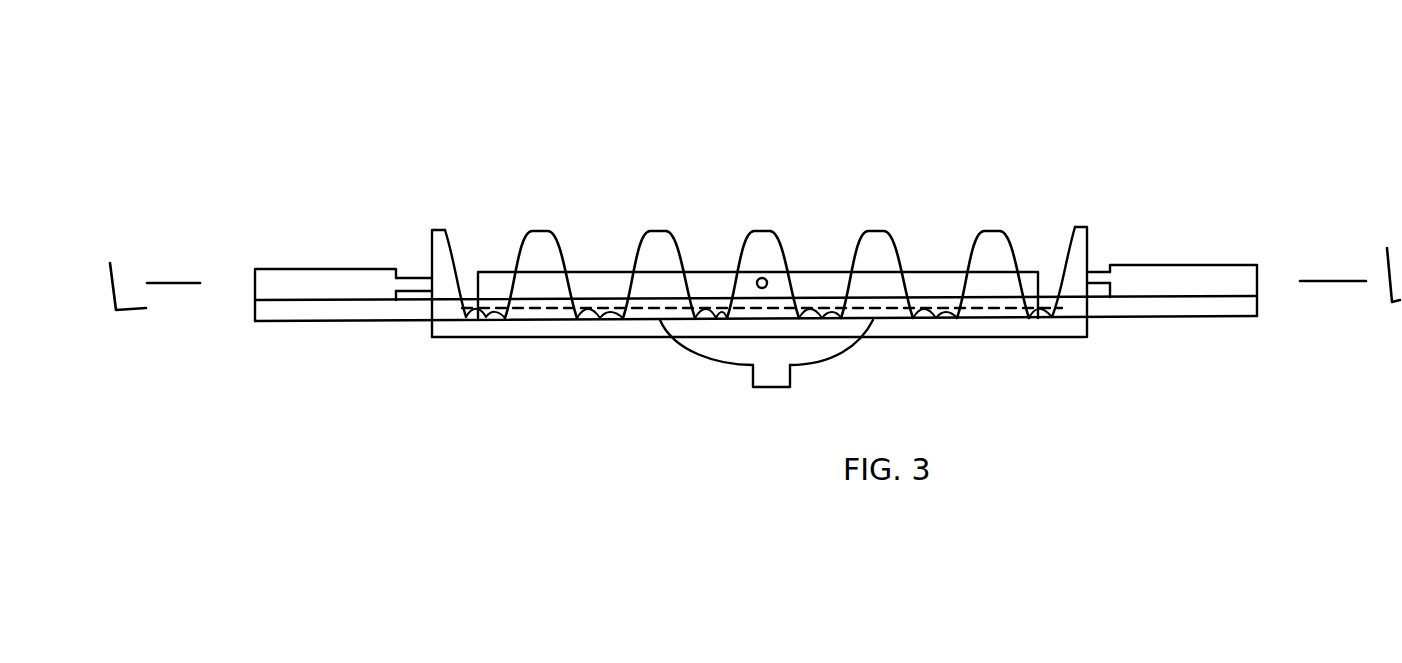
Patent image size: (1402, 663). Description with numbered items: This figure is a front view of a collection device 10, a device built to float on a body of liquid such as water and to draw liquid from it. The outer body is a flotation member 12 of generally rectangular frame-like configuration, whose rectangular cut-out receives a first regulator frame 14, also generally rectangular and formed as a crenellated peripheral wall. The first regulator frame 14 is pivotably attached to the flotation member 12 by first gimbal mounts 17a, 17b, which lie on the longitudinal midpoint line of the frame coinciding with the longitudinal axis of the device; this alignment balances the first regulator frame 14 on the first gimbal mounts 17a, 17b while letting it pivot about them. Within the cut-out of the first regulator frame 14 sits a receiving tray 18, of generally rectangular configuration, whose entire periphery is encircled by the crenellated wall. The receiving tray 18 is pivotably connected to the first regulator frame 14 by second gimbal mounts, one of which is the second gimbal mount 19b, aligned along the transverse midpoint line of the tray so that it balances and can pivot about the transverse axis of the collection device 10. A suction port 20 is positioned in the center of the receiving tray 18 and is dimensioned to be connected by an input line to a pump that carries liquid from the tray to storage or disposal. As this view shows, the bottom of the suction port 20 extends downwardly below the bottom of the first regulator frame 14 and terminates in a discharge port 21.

The collection device 10 is at (745, 130).
The flotation member 12 is at (1160, 302).
The first regulator frame 14 is at (653, 262).
The first gimbal mount 17a is at (428, 276).
The first gimbal mount 17b is at (1092, 272).
The receiving tray 18 is at (925, 283).
The second gimbal mount 19b is at (766, 280).
The suction port 20 is at (723, 345).
The discharge port 21 is at (768, 388).